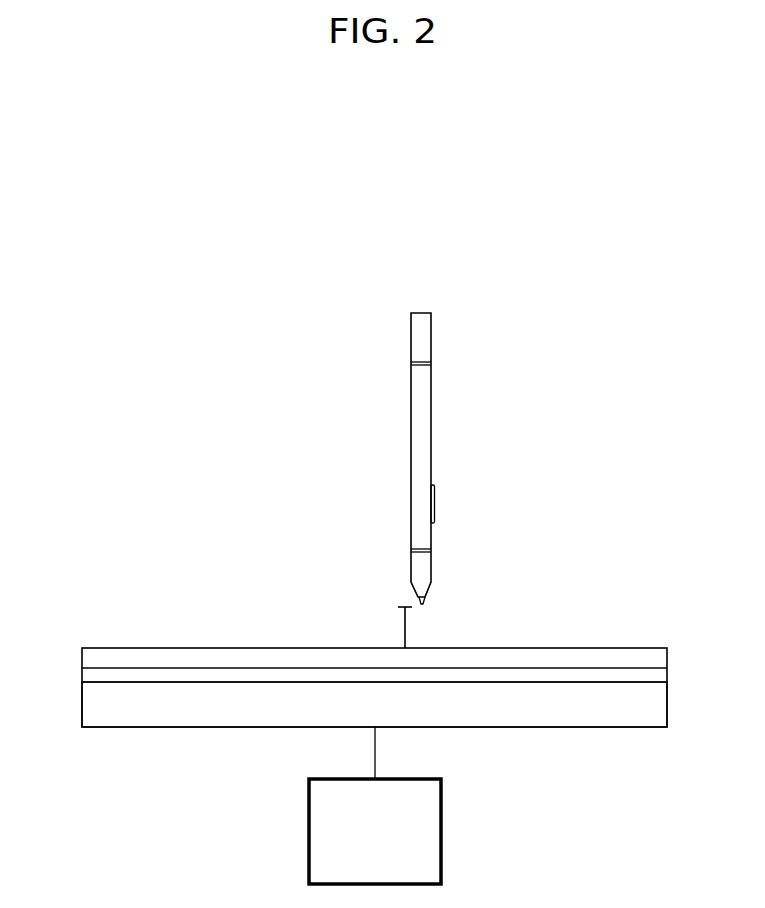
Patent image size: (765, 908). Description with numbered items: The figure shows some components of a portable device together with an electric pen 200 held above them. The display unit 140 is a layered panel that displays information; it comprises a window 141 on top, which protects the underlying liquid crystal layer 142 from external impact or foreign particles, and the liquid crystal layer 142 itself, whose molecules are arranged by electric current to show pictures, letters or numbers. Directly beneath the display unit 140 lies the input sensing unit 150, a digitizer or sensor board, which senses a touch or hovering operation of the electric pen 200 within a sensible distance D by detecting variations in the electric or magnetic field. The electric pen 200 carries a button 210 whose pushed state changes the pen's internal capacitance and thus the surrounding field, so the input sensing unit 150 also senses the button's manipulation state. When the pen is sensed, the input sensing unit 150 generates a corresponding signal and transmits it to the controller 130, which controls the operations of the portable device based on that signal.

The electric pen 200 is at (432, 444).
The button 210 is at (435, 502).
The display unit 140 is at (370, 684).
The window 141 is at (87, 657).
The liquid crystal layer 142 is at (85, 675).
The input sensing unit 150 is at (668, 697).
The controller 130 is at (445, 832).
The sensible distance D is at (397, 607).